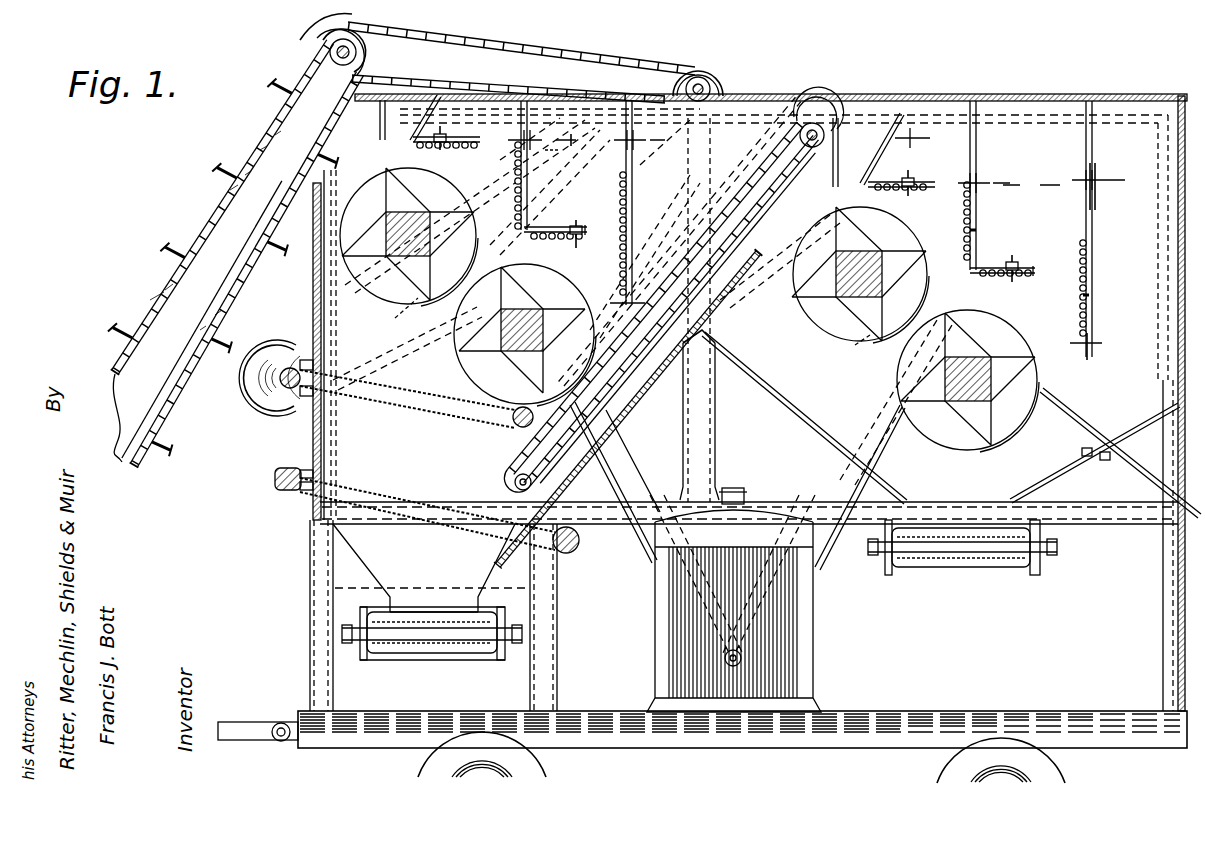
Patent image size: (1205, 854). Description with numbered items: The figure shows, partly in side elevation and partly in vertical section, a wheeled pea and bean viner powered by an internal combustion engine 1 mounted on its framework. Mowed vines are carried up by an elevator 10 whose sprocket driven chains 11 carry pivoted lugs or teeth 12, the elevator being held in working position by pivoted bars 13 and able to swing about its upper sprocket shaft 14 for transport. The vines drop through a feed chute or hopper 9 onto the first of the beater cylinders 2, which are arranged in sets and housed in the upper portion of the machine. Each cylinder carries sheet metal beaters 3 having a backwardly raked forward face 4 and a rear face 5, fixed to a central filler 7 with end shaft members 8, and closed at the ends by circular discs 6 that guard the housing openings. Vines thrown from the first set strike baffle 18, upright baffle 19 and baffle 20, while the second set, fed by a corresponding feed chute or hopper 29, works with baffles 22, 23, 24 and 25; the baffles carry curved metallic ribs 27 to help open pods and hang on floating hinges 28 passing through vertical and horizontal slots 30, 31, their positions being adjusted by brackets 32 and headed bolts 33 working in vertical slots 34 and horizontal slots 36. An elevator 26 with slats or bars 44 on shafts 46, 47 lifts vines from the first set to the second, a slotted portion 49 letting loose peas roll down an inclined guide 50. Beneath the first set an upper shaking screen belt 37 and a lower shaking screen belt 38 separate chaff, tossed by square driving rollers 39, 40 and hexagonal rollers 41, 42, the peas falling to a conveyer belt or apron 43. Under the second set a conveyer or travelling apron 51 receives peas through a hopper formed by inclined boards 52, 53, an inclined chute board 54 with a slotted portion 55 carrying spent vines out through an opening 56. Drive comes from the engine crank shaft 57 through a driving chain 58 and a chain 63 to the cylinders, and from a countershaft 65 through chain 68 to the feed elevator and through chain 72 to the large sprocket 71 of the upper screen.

The internal combustion engine 1 is at (813, 636).
The beater cylinders 2 is at (385, 296).
The beaters 3 is at (629, 330).
The forward face 4 is at (402, 200).
The rear face 5 is at (442, 260).
The circular discs 6 is at (375, 290).
The central filler 7 is at (433, 252).
The shaft members 8 is at (425, 214).
The feed chute or hopper 9 is at (410, 100).
The elevator 10 is at (236, 208).
The sprocket driven chains 11 is at (172, 400).
The pivoted lugs or teeth 12 is at (275, 82).
The pivoted bars 13 is at (248, 722).
The upper sprocket shaft 14 is at (328, 52).
The baffle 18 is at (440, 146).
The baffle 19 is at (533, 182).
The baffle 20 is at (553, 240).
The baffle 22 is at (920, 189).
The baffle 23 is at (968, 233).
The baffle 24 is at (1000, 275).
The baffle 25 is at (1082, 298).
The elevator 26 is at (688, 286).
The curved metallic ribs 27 is at (520, 170).
The hinges 28 is at (413, 142).
The feed chute or hopper 29 is at (866, 128).
The vertical slots 30 is at (708, 330).
The horizontal slots 31 is at (612, 303).
The brackets 32 is at (450, 140).
The headed bolts 33 is at (580, 240).
The vertical slots 34 is at (1005, 272).
The horizontal slots 36 is at (450, 110).
The shaking screen belt 37 is at (380, 400).
The shaking screen belt 38 is at (378, 494).
The driving roller 39 is at (298, 406).
The driving roller 40 is at (280, 491).
The roller 41 is at (516, 426).
The roller 42 is at (575, 550).
The conveyer belt or apron 43 is at (395, 652).
The slats or bars 44 is at (758, 170).
The shaft 46 is at (818, 122).
The shaft 47 is at (514, 482).
The slotted portion 49 is at (690, 258).
The inclined guide 50 is at (641, 392).
The conveyer or travelling apron 51 is at (1000, 565).
The inclined board 52 is at (814, 416).
The inclined board 53 is at (1087, 458).
The inclined chute board 54 is at (1108, 462).
The slotted portion 55 is at (1088, 428).
The opening 56 is at (1132, 430).
The crank shaft 57 is at (724, 659).
The driving chain 58 is at (648, 562).
The chain 63 is at (838, 556).
The countershaft 65 is at (712, 84).
The chain 68 is at (585, 54).
The large sprocket 71 is at (279, 378).
The chain 72 is at (283, 343).